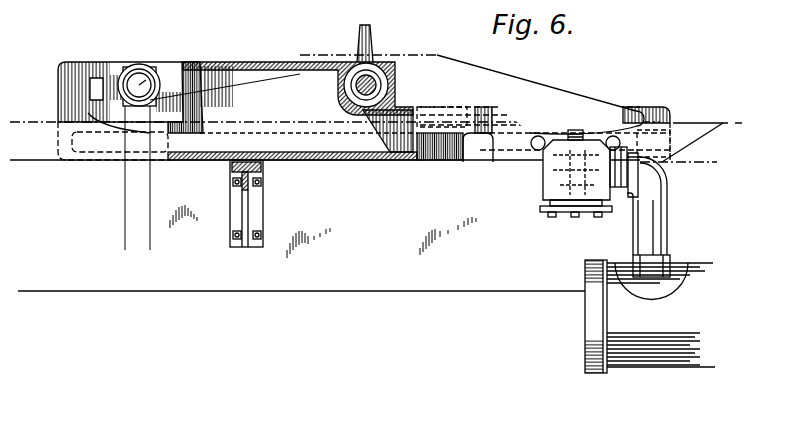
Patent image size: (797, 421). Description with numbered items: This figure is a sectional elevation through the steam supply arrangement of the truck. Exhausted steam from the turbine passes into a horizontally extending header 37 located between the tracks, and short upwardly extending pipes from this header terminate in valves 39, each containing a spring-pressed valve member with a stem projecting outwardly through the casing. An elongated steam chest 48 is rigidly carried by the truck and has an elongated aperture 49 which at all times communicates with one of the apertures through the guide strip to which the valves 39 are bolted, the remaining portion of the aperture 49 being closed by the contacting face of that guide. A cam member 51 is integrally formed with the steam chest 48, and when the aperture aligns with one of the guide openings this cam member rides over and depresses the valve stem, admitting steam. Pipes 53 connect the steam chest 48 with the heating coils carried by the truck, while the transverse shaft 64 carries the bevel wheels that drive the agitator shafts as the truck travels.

The steam chest 48 is at (93, 83).
The pipes 53 is at (142, 82).
The transverse shaft 64 is at (368, 83).
The cam member 51 is at (593, 133).
The elongated aperture 49 is at (345, 142).
The valve 39 is at (540, 188).
The header 37 is at (653, 323).